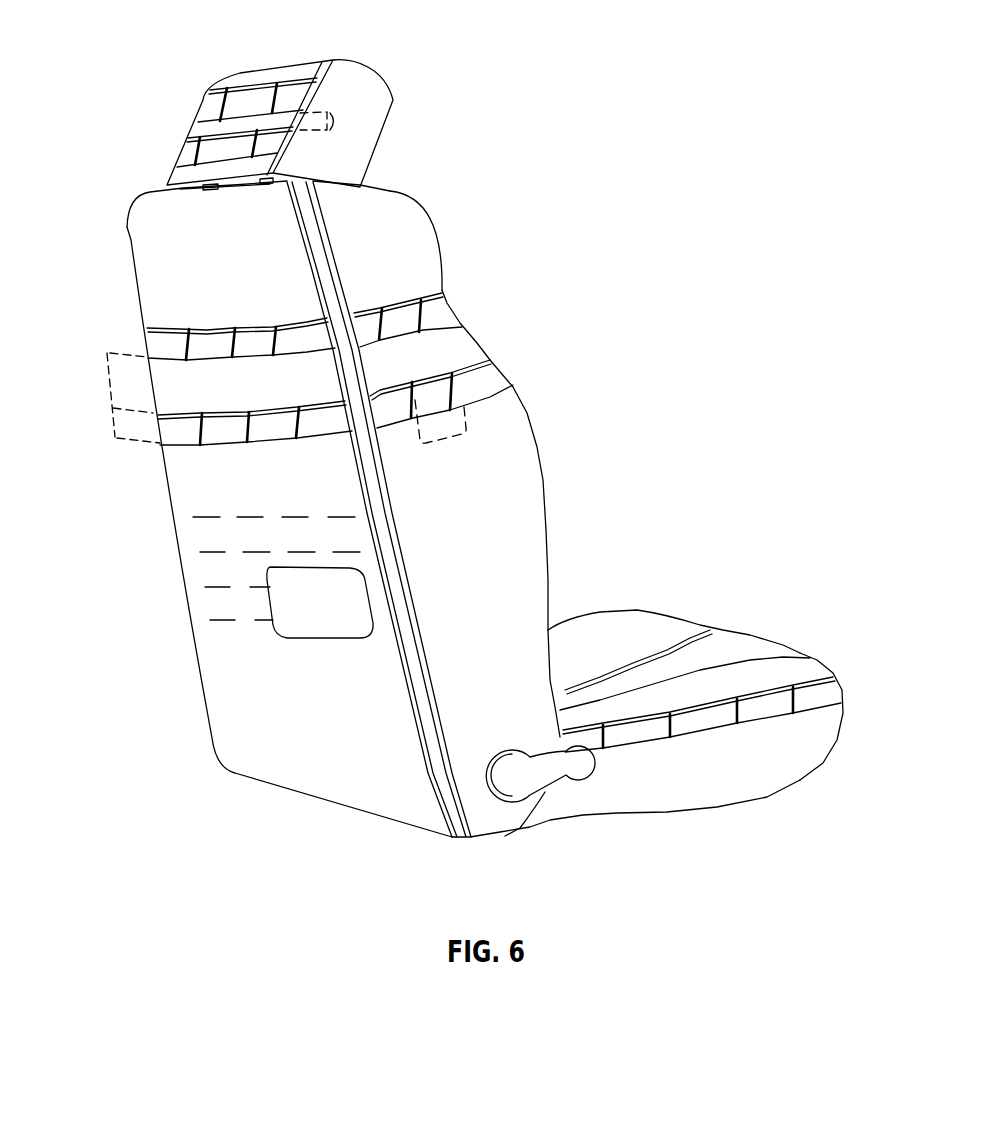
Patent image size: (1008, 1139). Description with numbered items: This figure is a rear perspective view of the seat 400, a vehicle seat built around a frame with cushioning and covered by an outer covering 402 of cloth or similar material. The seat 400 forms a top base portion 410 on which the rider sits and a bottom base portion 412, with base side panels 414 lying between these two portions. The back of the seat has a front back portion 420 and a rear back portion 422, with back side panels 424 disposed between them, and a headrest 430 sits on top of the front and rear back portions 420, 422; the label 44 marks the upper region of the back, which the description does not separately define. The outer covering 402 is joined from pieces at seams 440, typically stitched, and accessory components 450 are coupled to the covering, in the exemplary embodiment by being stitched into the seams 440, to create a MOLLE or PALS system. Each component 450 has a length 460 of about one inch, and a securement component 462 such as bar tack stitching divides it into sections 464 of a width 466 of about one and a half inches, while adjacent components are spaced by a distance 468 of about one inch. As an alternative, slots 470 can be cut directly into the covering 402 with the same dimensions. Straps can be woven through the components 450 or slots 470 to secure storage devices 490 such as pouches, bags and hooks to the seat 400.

The seat 400 is at (503, 63).
The outer covering 402 is at (532, 550).
The top base portion 410 is at (723, 625).
The bottom base portion 412 is at (668, 815).
The seat cushion side bolster 414 is at (820, 718).
The front back portion 420 is at (443, 262).
The rear back portion 422 is at (230, 697).
The back side panels 424 is at (515, 433).
The headrest 430 is at (288, 75).
The seat back top edge 44 is at (435, 232).
The seams 440 is at (320, 270).
The accessory components 450 is at (210, 105).
The length 460 is at (115, 423).
The securement component 462 is at (228, 328).
The sections 464 is at (310, 328).
The width 466 is at (447, 443).
The distance 468 is at (330, 117).
The slots 470 is at (203, 552).
The storage devices 490 is at (322, 640).